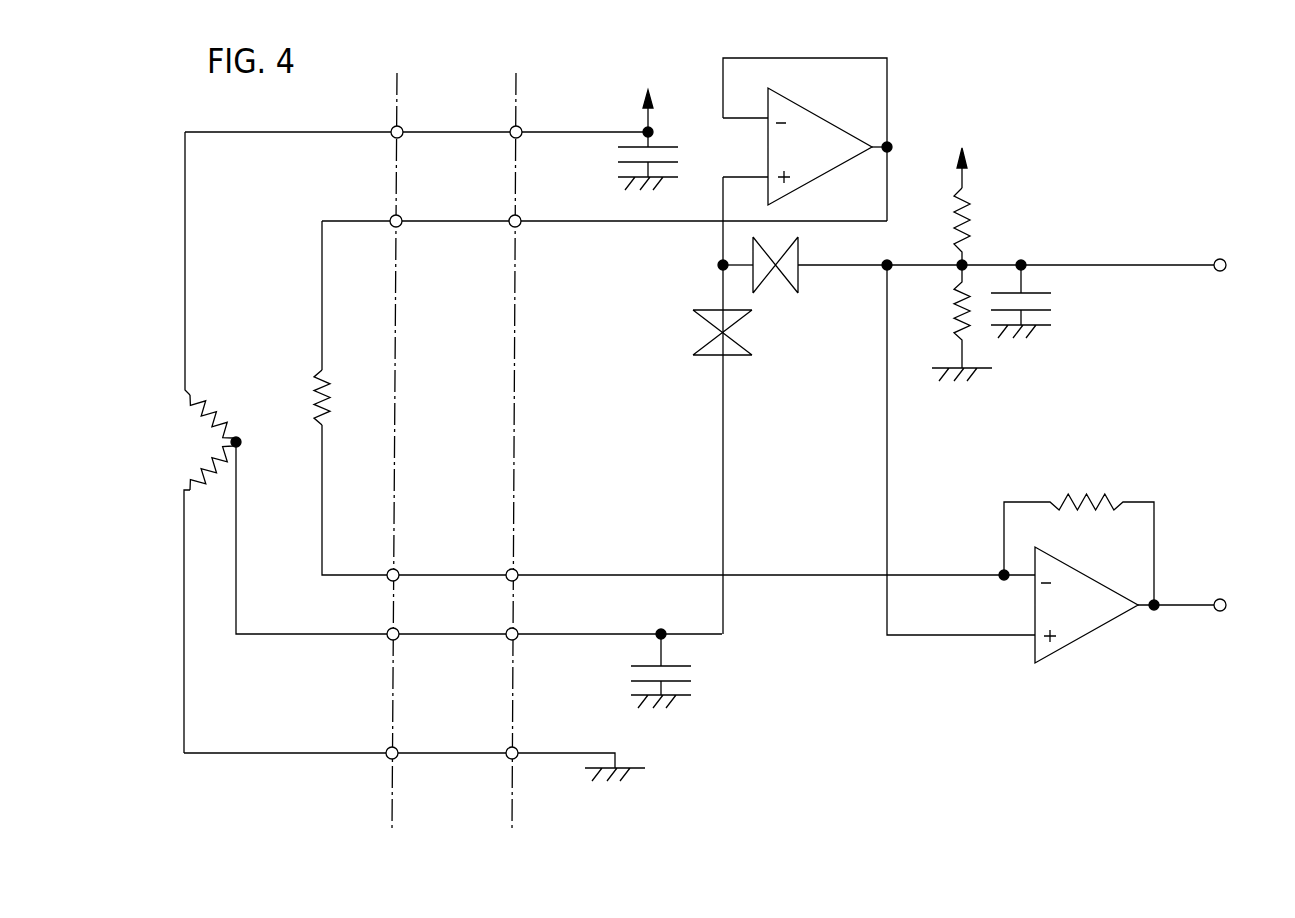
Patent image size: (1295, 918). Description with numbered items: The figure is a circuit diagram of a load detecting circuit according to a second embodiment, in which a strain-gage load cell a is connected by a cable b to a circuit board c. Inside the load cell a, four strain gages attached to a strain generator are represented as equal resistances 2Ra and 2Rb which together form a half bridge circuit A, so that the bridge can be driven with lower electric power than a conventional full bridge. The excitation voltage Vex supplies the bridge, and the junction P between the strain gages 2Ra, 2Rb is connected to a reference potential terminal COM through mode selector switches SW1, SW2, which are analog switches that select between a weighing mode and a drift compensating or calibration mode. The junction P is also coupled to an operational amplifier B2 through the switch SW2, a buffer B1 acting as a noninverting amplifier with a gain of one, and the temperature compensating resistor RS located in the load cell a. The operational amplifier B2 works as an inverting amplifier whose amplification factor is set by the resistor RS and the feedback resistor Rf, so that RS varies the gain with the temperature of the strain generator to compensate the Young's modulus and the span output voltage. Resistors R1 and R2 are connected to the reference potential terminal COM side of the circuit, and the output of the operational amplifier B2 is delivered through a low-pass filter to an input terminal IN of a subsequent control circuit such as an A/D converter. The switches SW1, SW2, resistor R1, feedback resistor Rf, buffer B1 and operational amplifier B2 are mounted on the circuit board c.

The half bridge circuit A is at (171, 449).
The strain gages 2Ra is at (219, 415).
The strain gages 2Rb is at (213, 476).
The junction P is at (245, 441).
The temperature compensating resistor RS is at (277, 235).
The load cell a is at (174, 488).
The cable b is at (473, 688).
The circuit board c is at (929, 419).
The buffer B1 is at (832, 102).
The operational amplifier B2 is at (1124, 587).
The mode selector switch SW1 is at (788, 283).
The mode selector switch SW2 is at (745, 342).
The resistor R1 is at (950, 226).
The resistor R2 is at (961, 323).
The feedback resistor Rf is at (1079, 539).
The excitation voltage Vex is at (811, 167).
The reference potential terminal COM is at (1077, 268).
The input terminal IN is at (1232, 606).